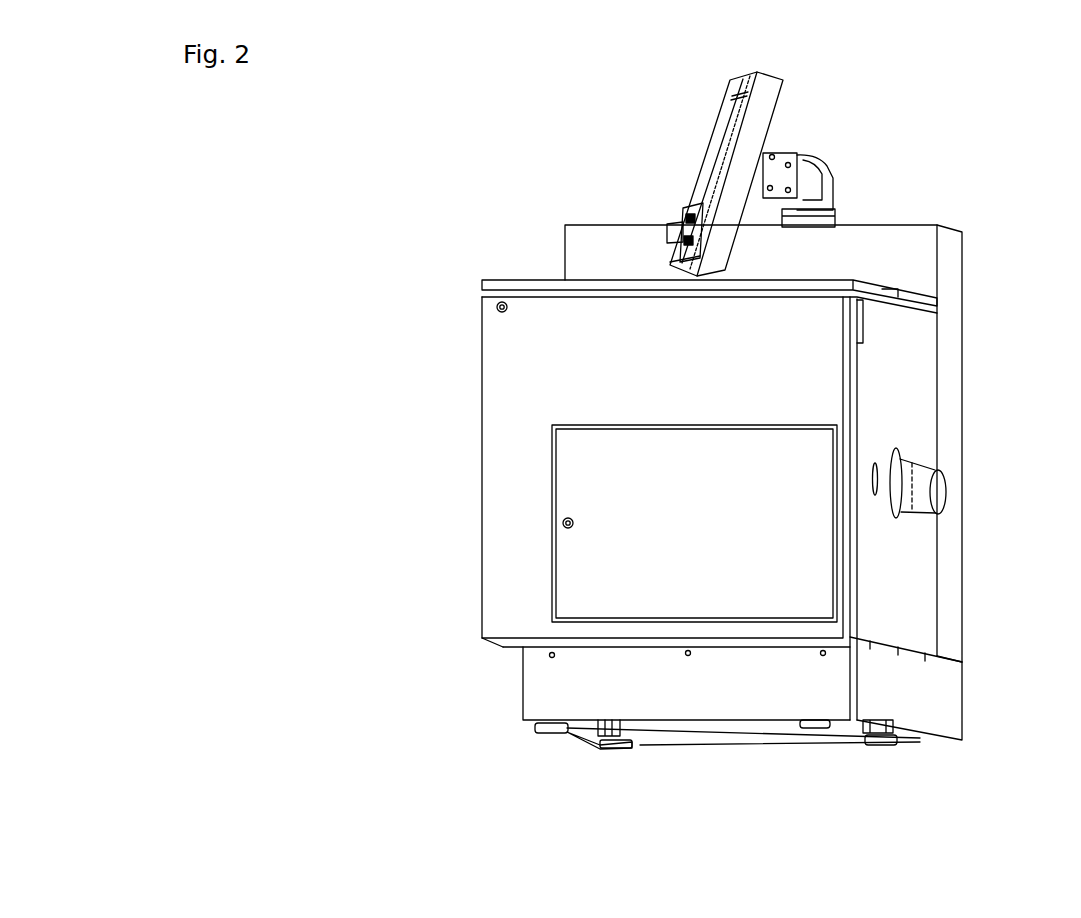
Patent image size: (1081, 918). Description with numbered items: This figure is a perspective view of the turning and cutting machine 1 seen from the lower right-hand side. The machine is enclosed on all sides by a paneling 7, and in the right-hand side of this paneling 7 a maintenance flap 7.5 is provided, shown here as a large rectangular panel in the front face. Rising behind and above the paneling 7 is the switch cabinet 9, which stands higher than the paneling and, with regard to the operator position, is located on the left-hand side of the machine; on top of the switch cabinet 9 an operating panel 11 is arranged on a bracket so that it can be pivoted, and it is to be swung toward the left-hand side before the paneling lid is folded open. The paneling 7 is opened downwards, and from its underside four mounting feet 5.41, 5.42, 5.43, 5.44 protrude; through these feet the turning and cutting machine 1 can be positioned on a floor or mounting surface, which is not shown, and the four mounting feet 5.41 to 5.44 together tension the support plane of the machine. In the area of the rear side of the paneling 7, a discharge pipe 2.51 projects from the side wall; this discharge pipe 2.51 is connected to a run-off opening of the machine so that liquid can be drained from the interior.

The turning and cutting machine 1 is at (373, 178).
The operating panel 11 is at (762, 112).
The switch cabinet 9 is at (900, 265).
The paneling 7 is at (497, 350).
The maintenance flap 7.5 is at (690, 561).
The discharge pipe 2.51 is at (920, 480).
The mounting foot 5.41 is at (893, 746).
The mounting foot 5.42 is at (617, 750).
The mounting foot 5.43 is at (550, 735).
The mounting foot 5.44 is at (827, 730).